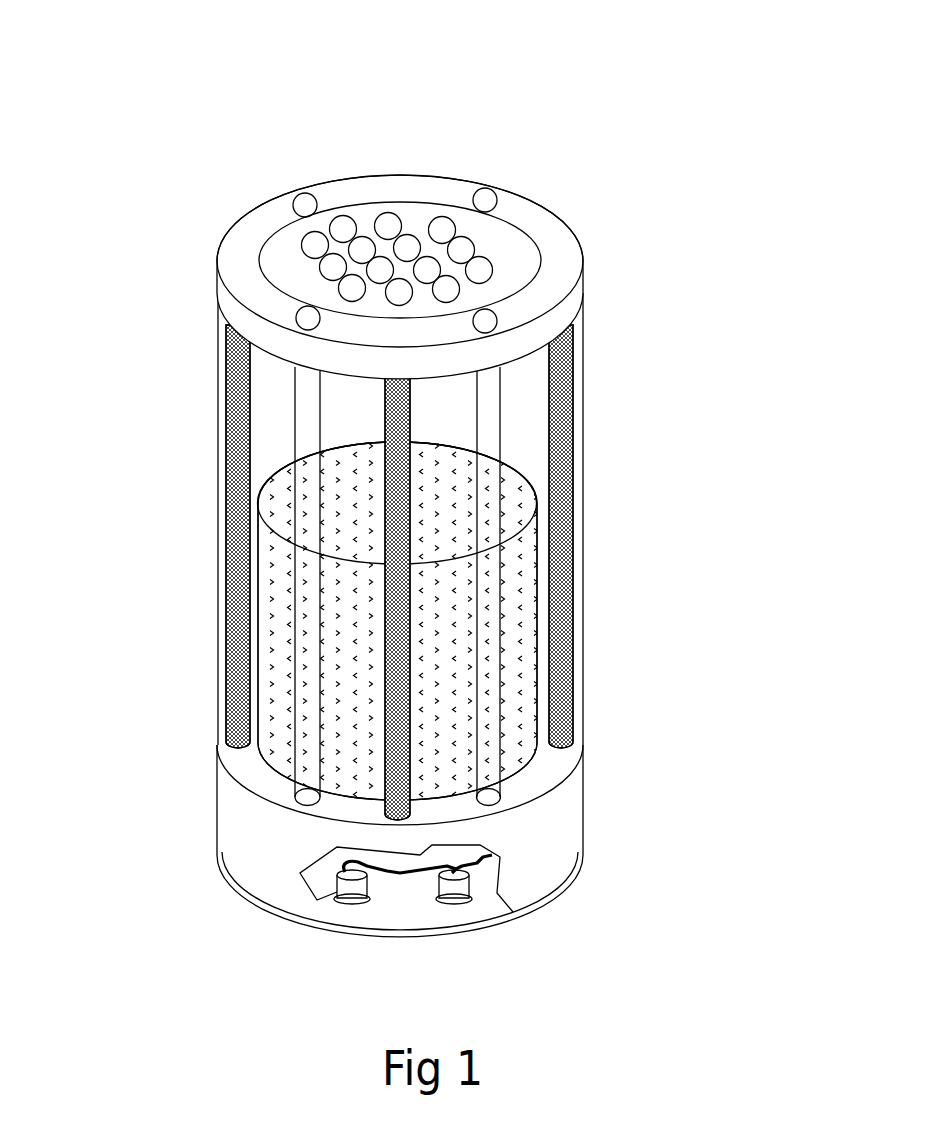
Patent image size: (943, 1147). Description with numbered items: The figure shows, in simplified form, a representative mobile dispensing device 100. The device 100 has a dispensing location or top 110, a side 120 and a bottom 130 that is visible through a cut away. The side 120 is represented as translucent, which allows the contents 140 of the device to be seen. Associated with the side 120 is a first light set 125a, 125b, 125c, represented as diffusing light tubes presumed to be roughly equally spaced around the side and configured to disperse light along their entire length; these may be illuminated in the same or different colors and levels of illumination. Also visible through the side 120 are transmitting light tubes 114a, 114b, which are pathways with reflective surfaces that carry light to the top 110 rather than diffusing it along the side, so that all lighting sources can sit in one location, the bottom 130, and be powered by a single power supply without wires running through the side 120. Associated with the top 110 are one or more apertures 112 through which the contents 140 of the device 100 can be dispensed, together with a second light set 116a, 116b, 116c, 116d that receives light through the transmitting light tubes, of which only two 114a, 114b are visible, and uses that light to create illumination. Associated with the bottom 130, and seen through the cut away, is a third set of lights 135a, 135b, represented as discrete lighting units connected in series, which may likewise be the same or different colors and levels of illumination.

The mobile dispensing device 100 is at (383, 539).
The dispensing location/top 110 is at (406, 224).
The apertures 112 is at (492, 260).
The transmitting light tube 114a is at (302, 705).
The transmitting light tube 114b is at (495, 692).
The second light set 116a is at (483, 198).
The second light set 116b is at (485, 318).
The second light set 116c is at (305, 313).
The second light set 116d is at (301, 204).
The side 120 is at (583, 365).
The first light set 125a is at (398, 538).
The first light set 125b is at (563, 532).
The first light set 125c is at (243, 478).
The bottom 130 is at (366, 880).
The third set of lights 135a is at (455, 888).
The third set of lights 135b is at (350, 887).
The contents 140 is at (280, 610).